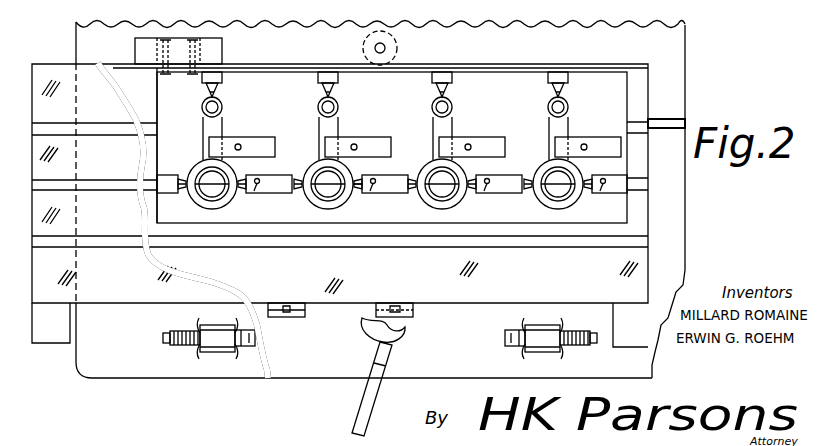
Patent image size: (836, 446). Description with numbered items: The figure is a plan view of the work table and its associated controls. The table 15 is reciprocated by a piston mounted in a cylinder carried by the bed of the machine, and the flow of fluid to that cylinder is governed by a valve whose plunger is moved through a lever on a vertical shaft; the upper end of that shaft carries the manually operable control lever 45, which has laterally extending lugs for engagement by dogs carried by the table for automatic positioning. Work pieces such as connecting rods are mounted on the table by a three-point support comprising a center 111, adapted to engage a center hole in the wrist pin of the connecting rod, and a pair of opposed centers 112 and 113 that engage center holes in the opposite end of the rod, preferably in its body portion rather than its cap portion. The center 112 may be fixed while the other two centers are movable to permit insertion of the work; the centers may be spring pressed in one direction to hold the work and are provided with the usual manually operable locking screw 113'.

The table 15 is at (46, 70).
The center 111 is at (323, 86).
The center 112 is at (303, 177).
The center 113 is at (348, 202).
The locking screw 113' is at (436, 197).
The manually operable control lever 45 is at (358, 412).